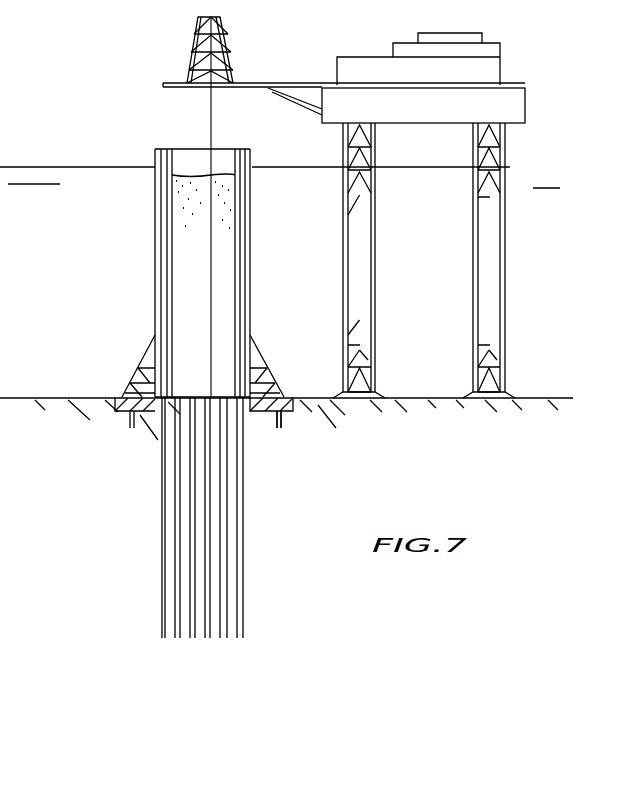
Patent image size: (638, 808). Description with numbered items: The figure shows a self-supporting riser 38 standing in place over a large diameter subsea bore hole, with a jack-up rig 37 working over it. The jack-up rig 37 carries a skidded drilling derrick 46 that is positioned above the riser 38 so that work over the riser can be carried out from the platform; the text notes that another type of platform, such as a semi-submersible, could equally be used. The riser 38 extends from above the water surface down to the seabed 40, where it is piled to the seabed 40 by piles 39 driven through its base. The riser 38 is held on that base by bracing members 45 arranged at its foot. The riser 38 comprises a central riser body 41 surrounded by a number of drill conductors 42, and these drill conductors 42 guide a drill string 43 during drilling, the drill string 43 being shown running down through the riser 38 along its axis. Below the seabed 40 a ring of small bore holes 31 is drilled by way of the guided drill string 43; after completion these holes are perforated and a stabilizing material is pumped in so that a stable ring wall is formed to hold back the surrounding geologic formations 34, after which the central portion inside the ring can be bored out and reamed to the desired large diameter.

The small bore holes 31 is at (246, 558).
The geologic formations 34 is at (465, 425).
The jack-up rig 37 is at (518, 104).
The self-supporting riser 38 is at (252, 283).
The piles 39 is at (283, 420).
The seabed 40 is at (537, 398).
The central riser body 41 is at (115, 397).
The drill conductors 42 is at (158, 296).
The drill string 43 is at (213, 122).
The bracing members 45 is at (148, 362).
The skidded drilling derrick 46 is at (228, 52).